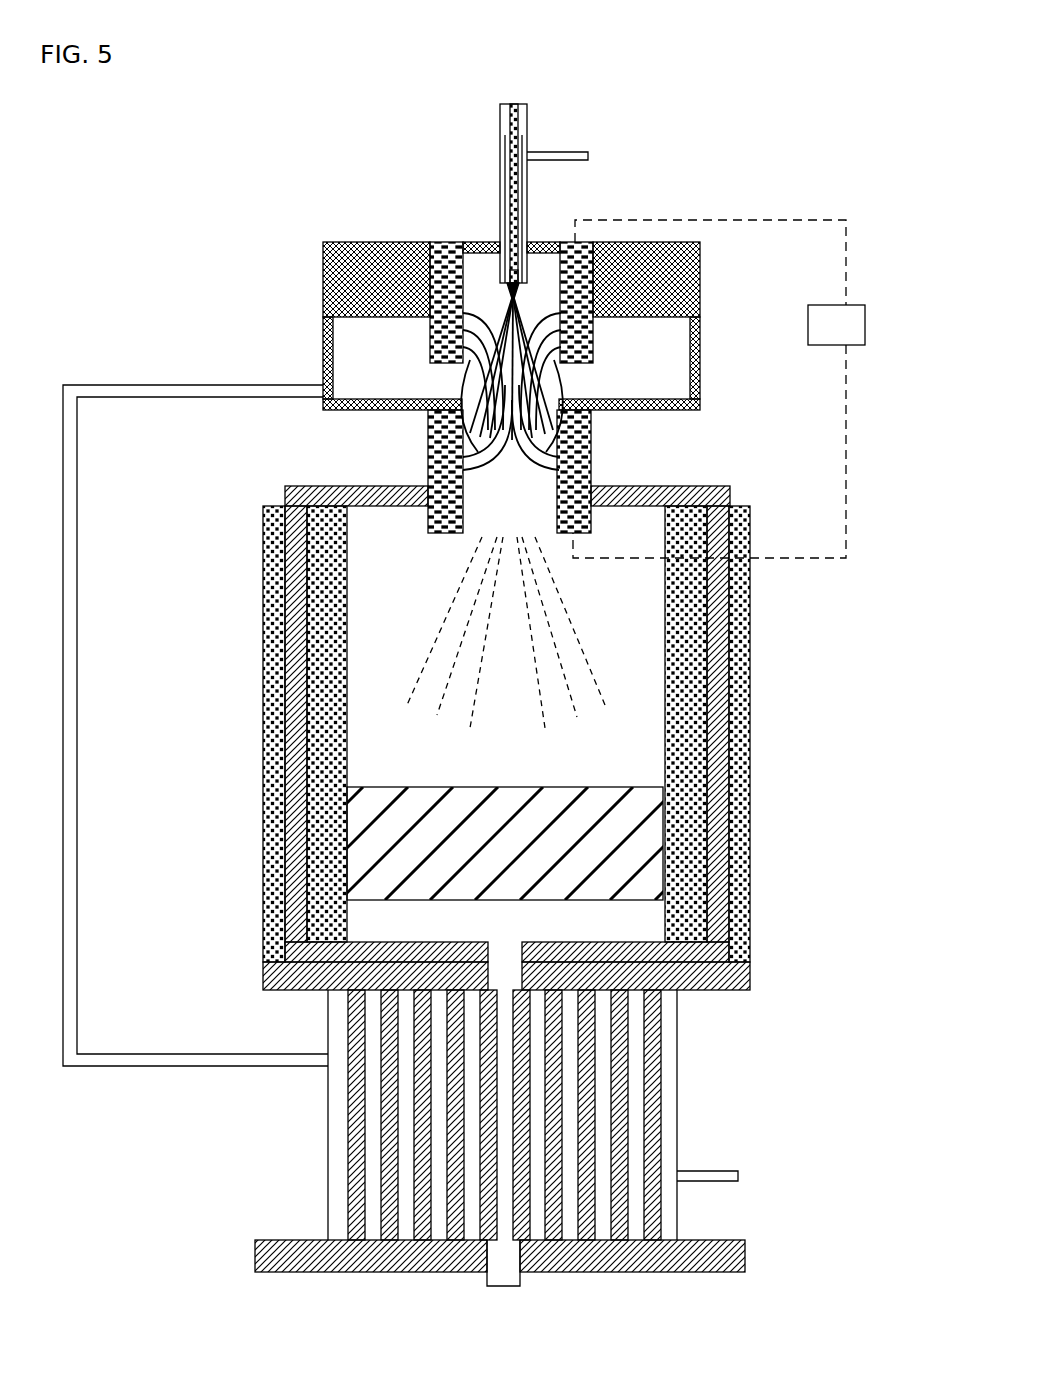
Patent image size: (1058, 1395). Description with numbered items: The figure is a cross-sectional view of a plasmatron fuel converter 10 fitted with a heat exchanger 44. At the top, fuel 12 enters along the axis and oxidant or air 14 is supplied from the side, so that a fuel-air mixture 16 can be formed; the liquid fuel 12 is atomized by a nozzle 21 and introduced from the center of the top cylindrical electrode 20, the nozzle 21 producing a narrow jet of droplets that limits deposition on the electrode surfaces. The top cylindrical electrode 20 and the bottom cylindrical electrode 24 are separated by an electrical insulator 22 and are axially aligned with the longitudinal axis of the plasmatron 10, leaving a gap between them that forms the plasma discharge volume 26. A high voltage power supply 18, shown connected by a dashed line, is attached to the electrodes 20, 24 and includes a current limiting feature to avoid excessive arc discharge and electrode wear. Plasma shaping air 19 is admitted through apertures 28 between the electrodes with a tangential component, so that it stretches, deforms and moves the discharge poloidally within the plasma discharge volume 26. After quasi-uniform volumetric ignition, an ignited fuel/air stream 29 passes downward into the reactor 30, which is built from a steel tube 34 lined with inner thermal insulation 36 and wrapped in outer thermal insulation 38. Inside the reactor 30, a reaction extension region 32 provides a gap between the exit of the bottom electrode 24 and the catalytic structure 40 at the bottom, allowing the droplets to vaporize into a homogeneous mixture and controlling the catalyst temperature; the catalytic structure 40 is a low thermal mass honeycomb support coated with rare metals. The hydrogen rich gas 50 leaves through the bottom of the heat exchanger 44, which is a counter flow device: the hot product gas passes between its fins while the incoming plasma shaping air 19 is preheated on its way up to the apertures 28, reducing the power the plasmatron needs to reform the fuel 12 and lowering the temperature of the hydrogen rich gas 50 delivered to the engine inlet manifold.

The plasmatron fuel converter 10 is at (730, 98).
The fuel 12 is at (513, 30).
The oxidant (air) 14 is at (614, 157).
The fuel-air mixture 16 is at (503, 285).
The high voltage power supply 18 is at (719, 389).
The plasma shaping air 19 is at (752, 1176).
The top cylindrical electrode 20 is at (445, 297).
The nozzle 21 is at (525, 280).
The electrical insulator 22 is at (367, 277).
The bottom cylindrical electrode 24 is at (432, 459).
The plasma discharge volume 26 is at (515, 390).
The apertures (channels) 28 is at (440, 378).
The ignited fuel/air stream 29 is at (470, 622).
The reactor 30 is at (510, 738).
The reaction extension region 32 is at (422, 773).
The steel tube 34 is at (285, 675).
The inner thermal insulation 36 is at (325, 816).
The outer thermal insulation 38 is at (272, 725).
The catalytic structure 40 is at (425, 883).
The heat exchanger 44 is at (328, 1162).
The hydrogen rich gas 50 is at (503, 1286).